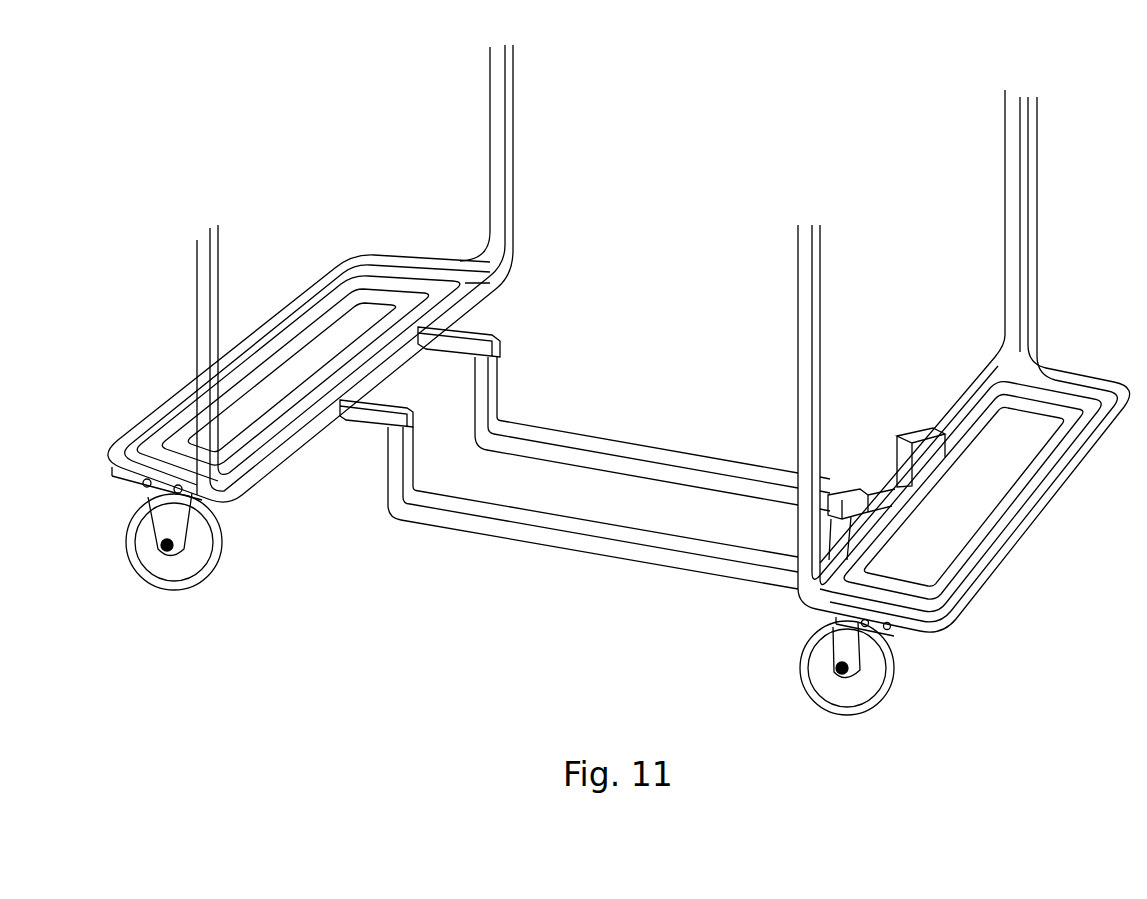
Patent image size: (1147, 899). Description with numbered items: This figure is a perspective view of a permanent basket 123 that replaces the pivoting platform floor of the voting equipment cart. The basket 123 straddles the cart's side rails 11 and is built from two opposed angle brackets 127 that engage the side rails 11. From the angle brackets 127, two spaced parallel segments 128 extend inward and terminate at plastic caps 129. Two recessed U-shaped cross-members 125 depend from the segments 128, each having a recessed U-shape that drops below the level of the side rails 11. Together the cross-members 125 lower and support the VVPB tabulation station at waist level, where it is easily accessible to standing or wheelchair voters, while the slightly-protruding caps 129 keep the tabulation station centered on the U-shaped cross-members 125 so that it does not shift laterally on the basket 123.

The side rails 11 is at (267, 473).
The permanent basket 123 is at (396, 520).
The recessed U-shaped cross-members 125 is at (455, 528).
The angle brackets 127 is at (313, 437).
The spaced parallel segments 128 is at (387, 403).
The plastic caps 129 is at (415, 418).